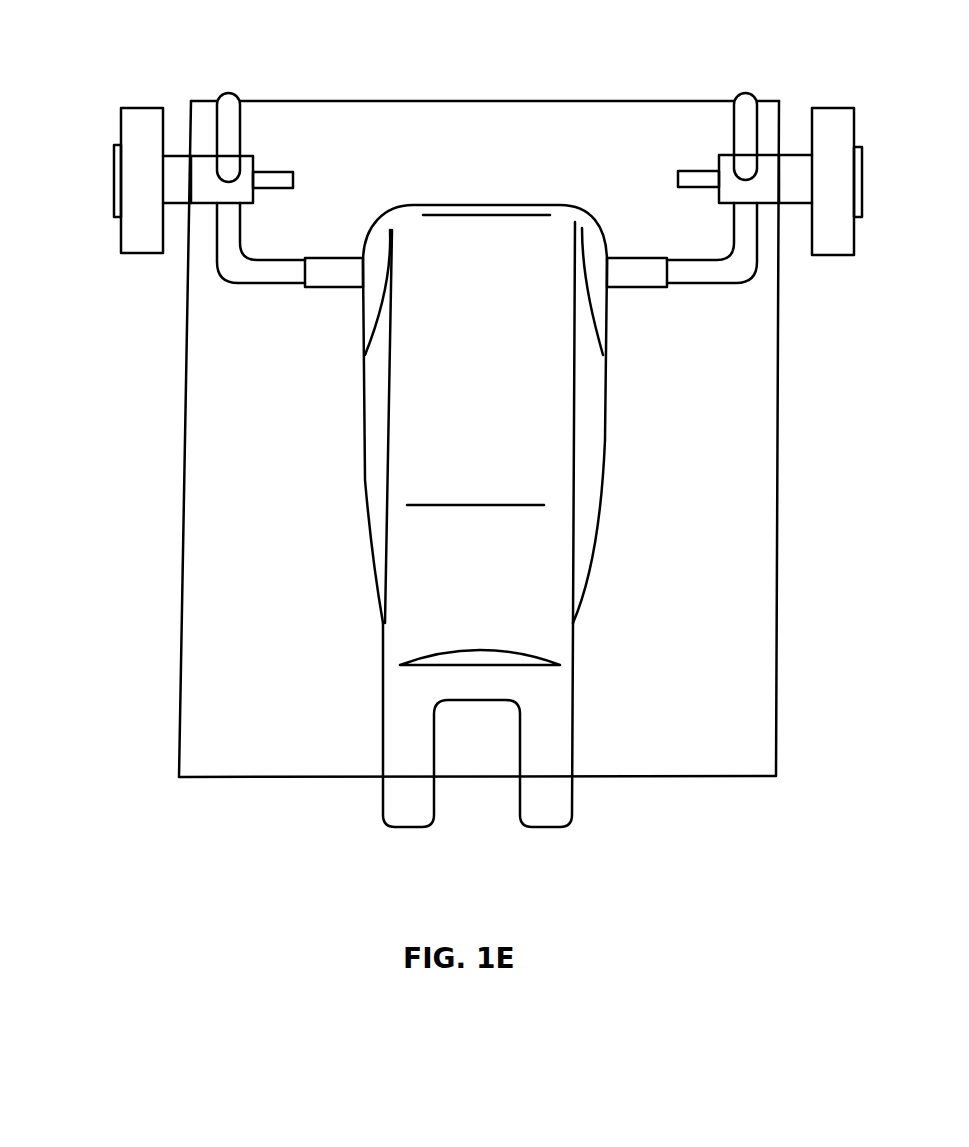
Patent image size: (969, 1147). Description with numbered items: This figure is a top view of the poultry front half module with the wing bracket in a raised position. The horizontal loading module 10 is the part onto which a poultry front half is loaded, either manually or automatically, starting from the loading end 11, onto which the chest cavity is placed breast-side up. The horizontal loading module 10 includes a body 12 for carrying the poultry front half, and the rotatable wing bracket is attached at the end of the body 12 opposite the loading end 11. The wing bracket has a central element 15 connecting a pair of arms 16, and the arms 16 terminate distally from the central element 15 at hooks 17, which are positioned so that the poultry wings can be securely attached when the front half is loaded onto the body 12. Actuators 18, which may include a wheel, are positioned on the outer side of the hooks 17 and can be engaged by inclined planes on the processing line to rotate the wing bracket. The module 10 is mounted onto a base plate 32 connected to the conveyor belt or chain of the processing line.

The horizontal loading module 10 is at (457, 167).
The loading end 11 is at (380, 824).
The body 12 is at (377, 403).
The central element 15 is at (278, 287).
The arms 16 is at (213, 237).
The hooks 17 is at (228, 110).
The actuators 18 is at (130, 120).
The base plate 32 is at (230, 562).